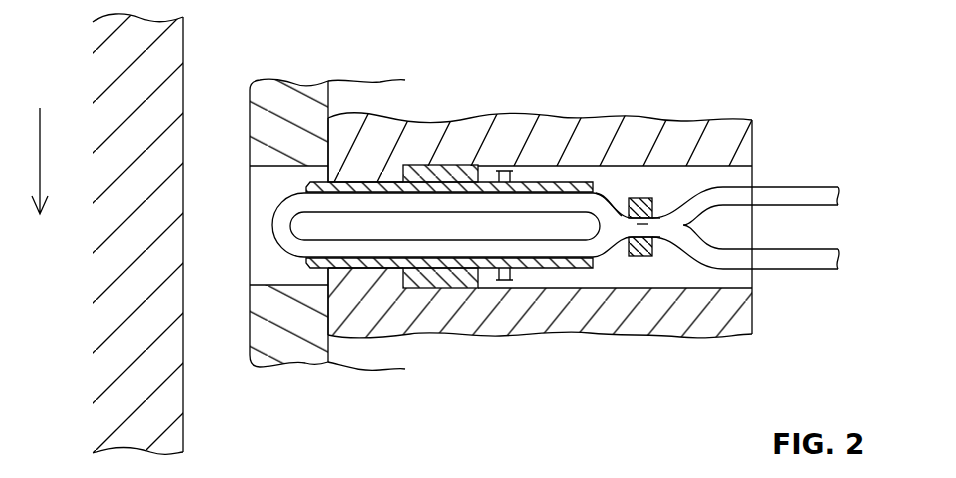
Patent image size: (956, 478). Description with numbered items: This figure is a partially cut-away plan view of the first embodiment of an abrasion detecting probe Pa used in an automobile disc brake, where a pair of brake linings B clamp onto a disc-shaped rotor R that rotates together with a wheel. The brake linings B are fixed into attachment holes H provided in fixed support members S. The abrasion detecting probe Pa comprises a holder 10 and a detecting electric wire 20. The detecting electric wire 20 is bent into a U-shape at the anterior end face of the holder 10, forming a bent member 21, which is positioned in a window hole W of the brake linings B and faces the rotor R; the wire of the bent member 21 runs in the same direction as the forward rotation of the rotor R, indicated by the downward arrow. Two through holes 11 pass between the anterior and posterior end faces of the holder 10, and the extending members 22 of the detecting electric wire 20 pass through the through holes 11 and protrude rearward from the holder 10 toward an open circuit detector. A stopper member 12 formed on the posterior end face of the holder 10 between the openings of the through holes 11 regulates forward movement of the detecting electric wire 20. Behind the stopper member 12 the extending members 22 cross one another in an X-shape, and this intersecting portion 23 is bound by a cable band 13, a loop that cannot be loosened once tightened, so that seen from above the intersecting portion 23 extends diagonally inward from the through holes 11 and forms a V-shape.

The rotor R is at (168, 393).
The window hole W is at (265, 166).
The brake lining B is at (293, 340).
The attachment hole H is at (540, 242).
The fixed support member S is at (527, 325).
The holder 10 is at (440, 173).
The through hole 11 is at (487, 197).
The stopper member 12 is at (601, 216).
The cable band 13 is at (641, 254).
The detecting electric wire 20 is at (806, 169).
The bent member 21 is at (280, 222).
The extending member 22 is at (350, 203).
The intersecting portion 23 is at (653, 217).
The abrasion detecting probe Pa is at (624, 175).